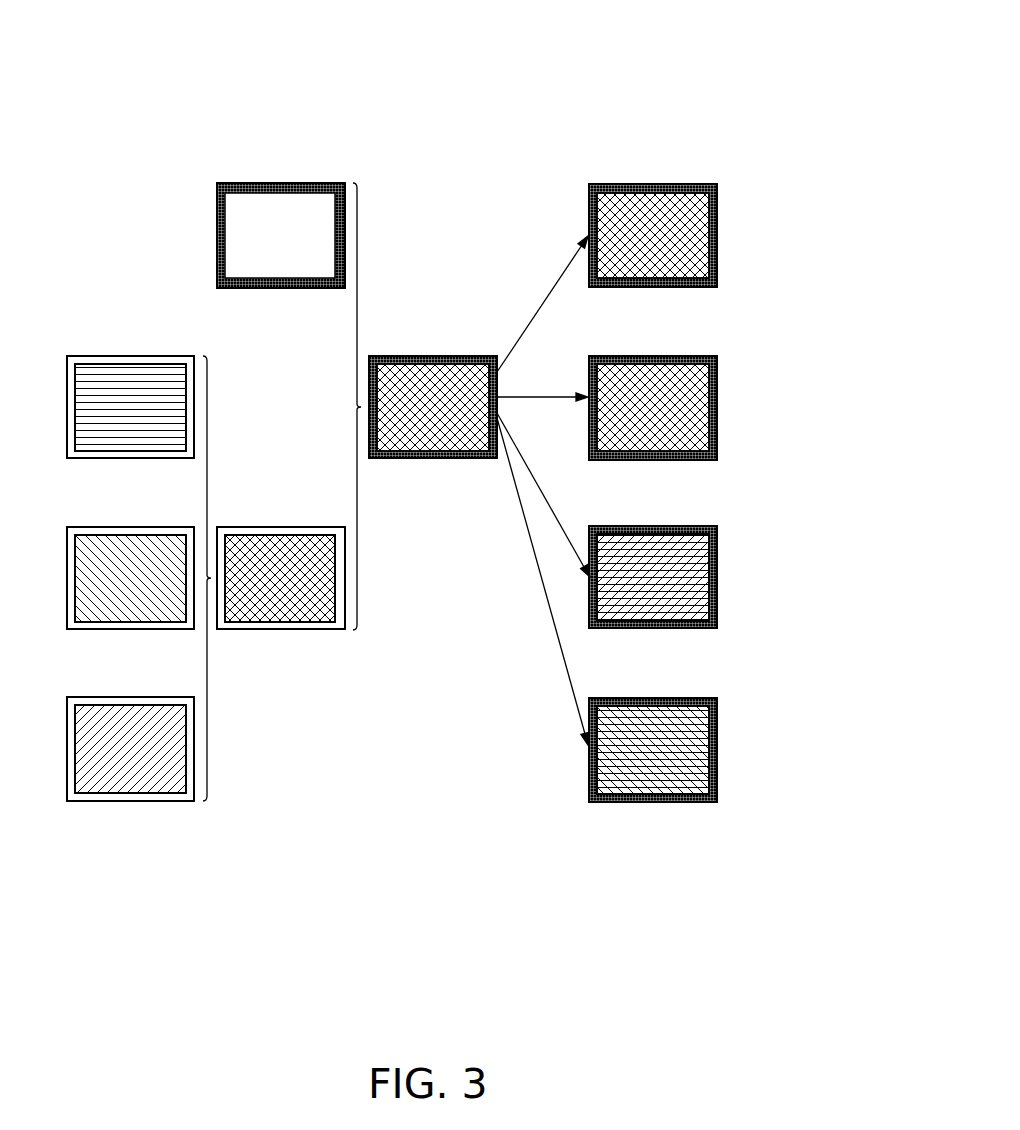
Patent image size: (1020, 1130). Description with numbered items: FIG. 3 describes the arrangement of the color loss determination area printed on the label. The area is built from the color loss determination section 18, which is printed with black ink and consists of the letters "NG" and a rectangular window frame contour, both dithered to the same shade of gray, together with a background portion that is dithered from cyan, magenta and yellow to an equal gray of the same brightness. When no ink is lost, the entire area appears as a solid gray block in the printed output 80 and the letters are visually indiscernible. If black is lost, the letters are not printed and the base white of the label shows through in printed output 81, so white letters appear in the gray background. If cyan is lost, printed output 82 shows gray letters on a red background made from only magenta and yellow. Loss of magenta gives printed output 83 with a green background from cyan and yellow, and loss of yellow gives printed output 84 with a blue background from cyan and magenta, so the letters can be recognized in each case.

The color loss determination section 18 is at (198, 200).
The printed output 80 is at (449, 368).
The printed output 81 is at (598, 145).
The printed output 82 is at (697, 382).
The printed output 83 is at (699, 549).
The printed output 84 is at (693, 759).